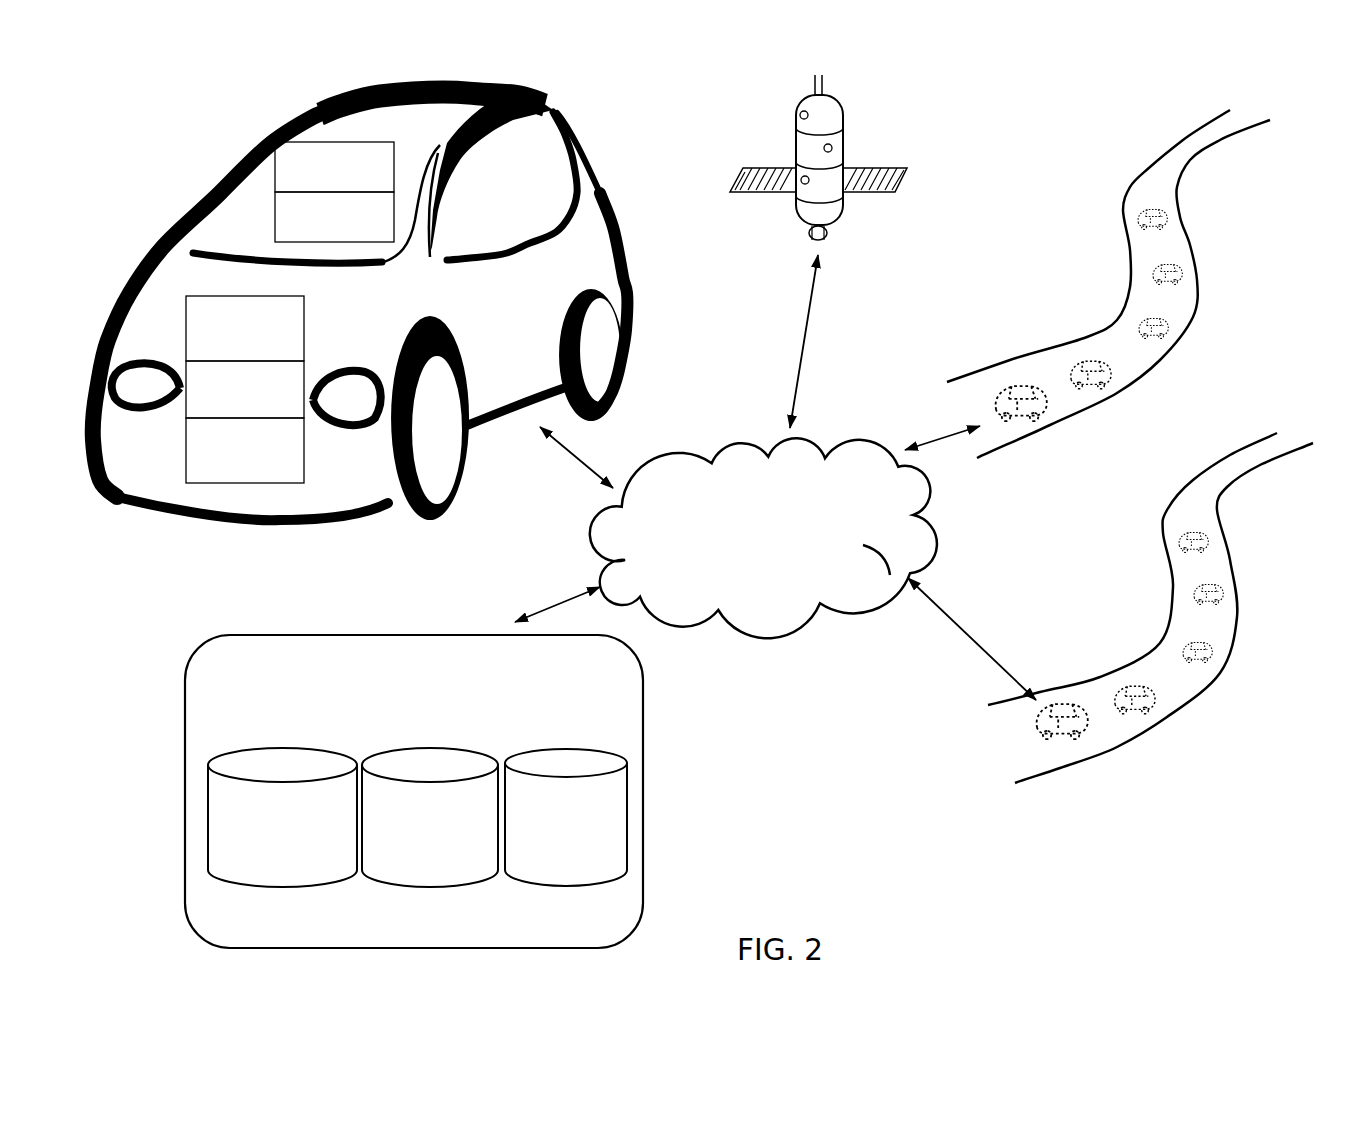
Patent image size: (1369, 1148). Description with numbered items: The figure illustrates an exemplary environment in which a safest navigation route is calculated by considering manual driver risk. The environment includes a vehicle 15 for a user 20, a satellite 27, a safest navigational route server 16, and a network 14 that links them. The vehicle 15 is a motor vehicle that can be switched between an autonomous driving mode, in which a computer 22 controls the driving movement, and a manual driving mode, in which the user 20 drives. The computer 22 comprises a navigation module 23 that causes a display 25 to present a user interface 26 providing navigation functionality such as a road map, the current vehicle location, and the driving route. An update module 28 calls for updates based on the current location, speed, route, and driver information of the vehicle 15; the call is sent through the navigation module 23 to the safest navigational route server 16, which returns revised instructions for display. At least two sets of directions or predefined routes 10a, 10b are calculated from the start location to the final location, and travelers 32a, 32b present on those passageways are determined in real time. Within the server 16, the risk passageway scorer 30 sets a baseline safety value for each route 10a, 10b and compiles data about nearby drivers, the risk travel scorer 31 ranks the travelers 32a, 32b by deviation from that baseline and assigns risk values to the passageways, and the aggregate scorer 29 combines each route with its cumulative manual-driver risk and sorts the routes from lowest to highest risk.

The first set of directions / predefined route 10a is at (1087, 337).
The second set of directions / predefined route 10b is at (1233, 452).
The network 14 is at (739, 590).
The vehicle 15 is at (209, 175).
The safest navigational route server 16 is at (183, 725).
The user 20 is at (452, 82).
The computer 22 is at (258, 467).
The navigation module 23 is at (258, 410).
The display 25 is at (343, 177).
The user interface 26 is at (343, 227).
The satellite 27 is at (832, 148).
The update module 28 is at (258, 354).
The aggregate scorer 29 is at (262, 776).
The risk passageway scorer 30 is at (418, 776).
The risk travel scorer 31 is at (554, 770).
The travelers on first passageway 32a is at (1145, 205).
The travelers on second passageway 32b is at (1180, 533).